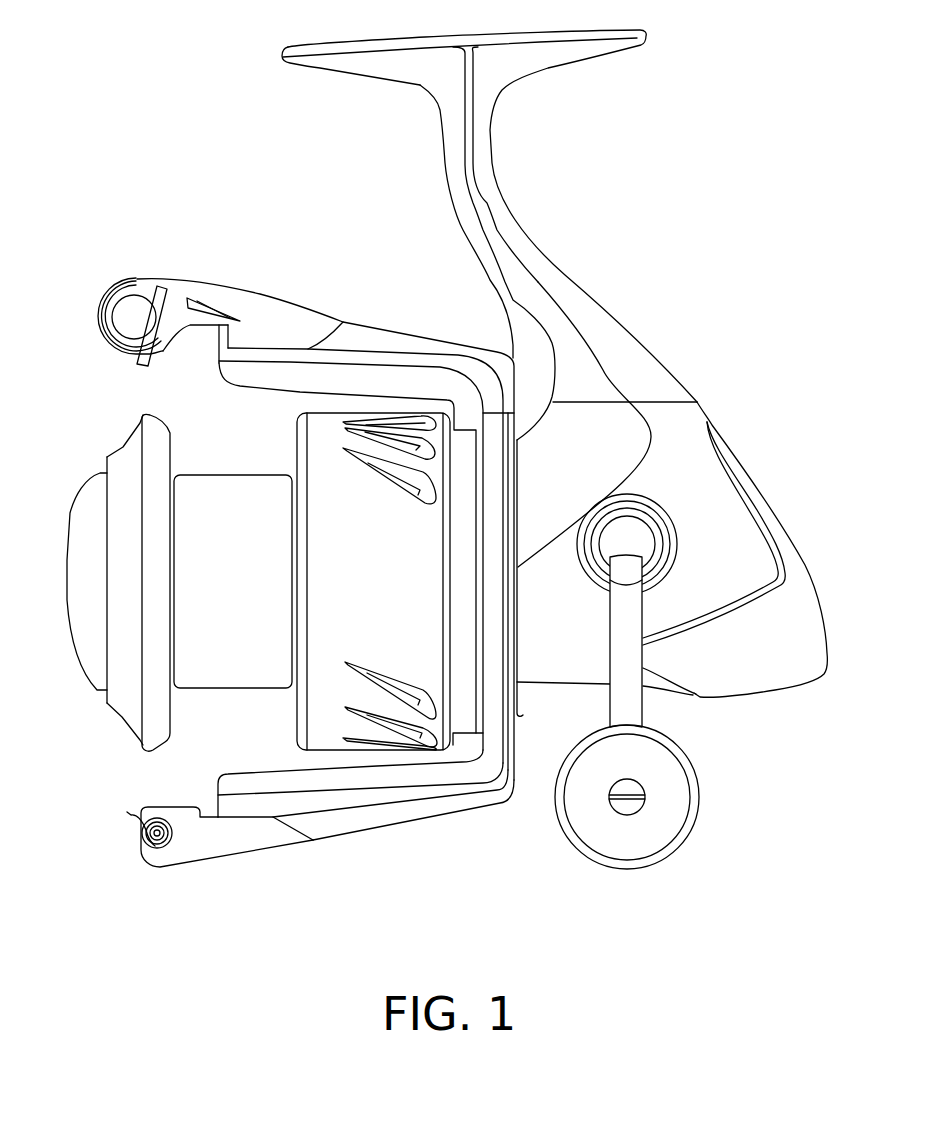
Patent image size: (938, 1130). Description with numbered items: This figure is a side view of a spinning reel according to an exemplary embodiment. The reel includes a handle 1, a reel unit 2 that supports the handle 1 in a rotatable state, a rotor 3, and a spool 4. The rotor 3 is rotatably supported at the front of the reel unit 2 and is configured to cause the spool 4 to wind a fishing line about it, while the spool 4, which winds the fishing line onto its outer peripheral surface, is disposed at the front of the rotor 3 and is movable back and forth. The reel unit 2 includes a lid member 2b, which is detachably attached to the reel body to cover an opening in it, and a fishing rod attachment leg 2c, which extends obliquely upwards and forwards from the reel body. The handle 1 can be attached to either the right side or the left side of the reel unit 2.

The handle 1 is at (650, 723).
The reel unit 2 is at (554, 373).
The lid member 2b is at (613, 433).
The fishing rod attachment leg 2c is at (540, 254).
The rotor 3 is at (370, 318).
The spool 4 is at (223, 462).